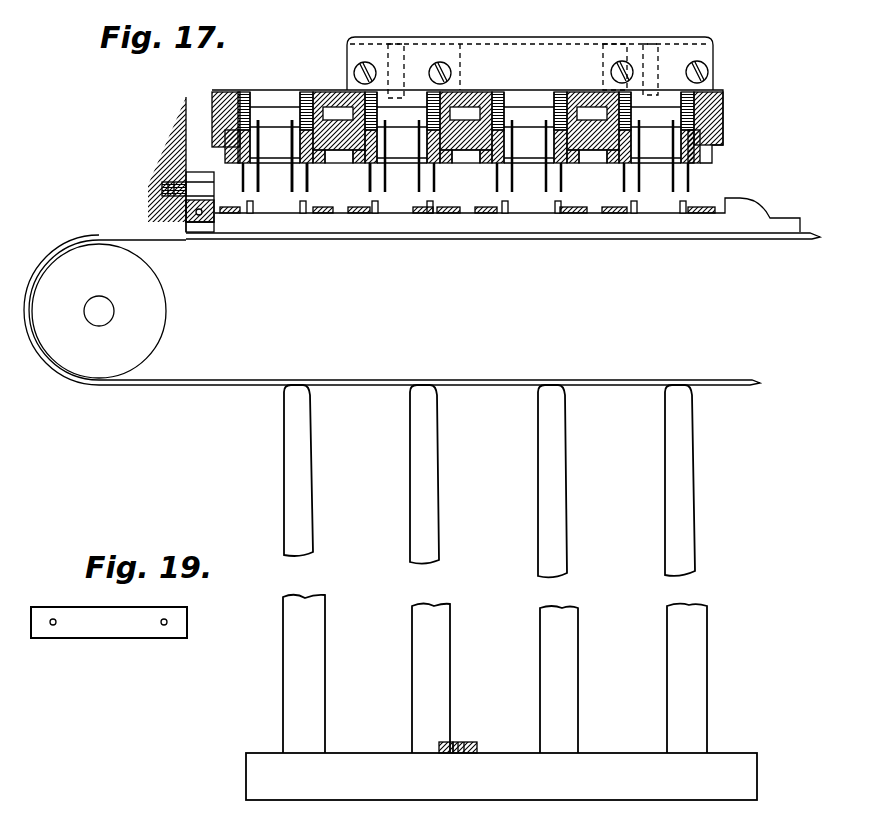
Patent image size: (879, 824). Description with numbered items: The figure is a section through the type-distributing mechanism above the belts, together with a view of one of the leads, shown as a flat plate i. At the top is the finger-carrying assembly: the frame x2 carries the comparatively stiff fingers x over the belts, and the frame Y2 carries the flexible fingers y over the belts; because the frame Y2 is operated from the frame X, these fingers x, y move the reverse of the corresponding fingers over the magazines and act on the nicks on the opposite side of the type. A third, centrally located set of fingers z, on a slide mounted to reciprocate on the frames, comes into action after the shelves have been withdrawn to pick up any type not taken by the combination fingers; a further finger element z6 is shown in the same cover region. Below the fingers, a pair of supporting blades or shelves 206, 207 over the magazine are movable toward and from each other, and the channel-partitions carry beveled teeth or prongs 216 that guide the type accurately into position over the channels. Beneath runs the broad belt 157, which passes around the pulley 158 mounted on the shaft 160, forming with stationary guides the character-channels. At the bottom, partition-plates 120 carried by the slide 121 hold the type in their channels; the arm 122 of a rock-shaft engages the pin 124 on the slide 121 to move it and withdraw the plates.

In FIG. 17, the frame x2 is at (213, 98).
In FIG. 17, the frame Y2 is at (278, 115).
In FIG. 17, the fingers z is at (398, 50).
In FIG. 17, the cover screw block z6 is at (650, 50).
In FIG. 17, the fingers y is at (262, 186).
In FIG. 17, the fingers x is at (366, 186).
In FIG. 17, the teeth or prongs 216 is at (383, 212).
In FIG. 17, the supporting blade or shelf 206 is at (236, 218).
In FIG. 17, the supporting blade or shelf 207 is at (398, 236).
In FIG. 17, the shaft 160 is at (90, 298).
In FIG. 17, the pulley 158 is at (168, 313).
In FIG. 17, the belt 157 is at (243, 381).
In FIG. 17, the partition-plates 120 is at (325, 652).
In FIG. 17, the pin 124 is at (453, 742).
In FIG. 17, the arm 122 is at (478, 750).
In FIG. 17, the slide 121 is at (501, 776).
In FIG. 19, the plate i is at (130, 642).